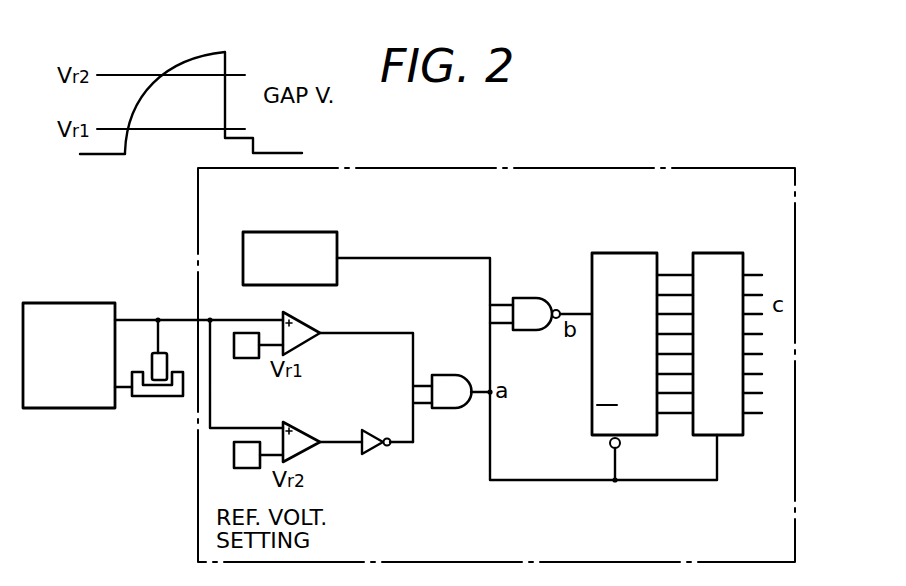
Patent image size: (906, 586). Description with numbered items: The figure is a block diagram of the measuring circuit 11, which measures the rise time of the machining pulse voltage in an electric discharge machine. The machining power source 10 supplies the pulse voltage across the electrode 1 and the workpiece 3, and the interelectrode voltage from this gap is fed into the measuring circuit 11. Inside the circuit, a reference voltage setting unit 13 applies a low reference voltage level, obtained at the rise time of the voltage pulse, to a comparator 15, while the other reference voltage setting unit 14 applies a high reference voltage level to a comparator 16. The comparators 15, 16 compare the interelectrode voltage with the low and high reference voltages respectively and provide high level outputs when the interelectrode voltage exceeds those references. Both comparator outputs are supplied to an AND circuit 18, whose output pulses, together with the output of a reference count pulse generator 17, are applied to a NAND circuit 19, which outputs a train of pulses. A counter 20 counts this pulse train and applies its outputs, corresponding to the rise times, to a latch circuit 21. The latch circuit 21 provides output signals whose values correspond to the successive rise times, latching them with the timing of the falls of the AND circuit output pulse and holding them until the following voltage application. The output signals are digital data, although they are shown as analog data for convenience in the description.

The electrode 1 is at (162, 363).
The workpiece 3 is at (153, 397).
The machining power source 10 is at (74, 304).
The measuring circuit 11 is at (713, 167).
The reference voltage setting unit 13 is at (243, 359).
The reference voltage setting unit 14 is at (247, 468).
The comparator 15 is at (295, 317).
The comparator 16 is at (297, 427).
The reference count pulse generator 17 is at (310, 232).
The AND circuit 18 is at (446, 375).
The NAND circuit 19 is at (524, 298).
The counter 20 is at (627, 253).
The latch circuit 21 is at (708, 253).